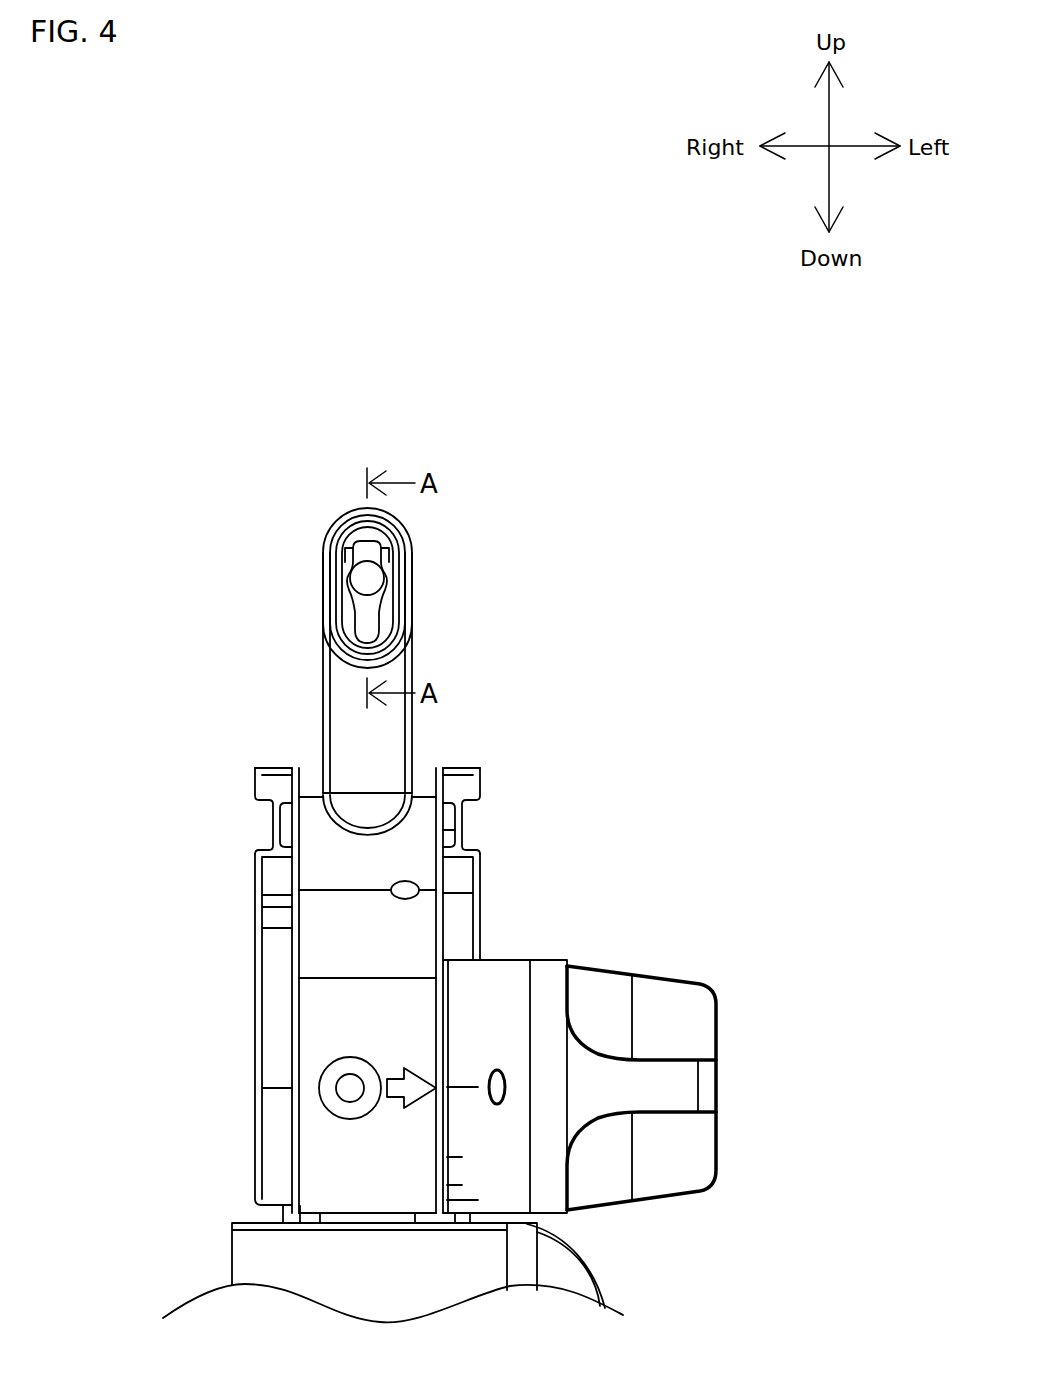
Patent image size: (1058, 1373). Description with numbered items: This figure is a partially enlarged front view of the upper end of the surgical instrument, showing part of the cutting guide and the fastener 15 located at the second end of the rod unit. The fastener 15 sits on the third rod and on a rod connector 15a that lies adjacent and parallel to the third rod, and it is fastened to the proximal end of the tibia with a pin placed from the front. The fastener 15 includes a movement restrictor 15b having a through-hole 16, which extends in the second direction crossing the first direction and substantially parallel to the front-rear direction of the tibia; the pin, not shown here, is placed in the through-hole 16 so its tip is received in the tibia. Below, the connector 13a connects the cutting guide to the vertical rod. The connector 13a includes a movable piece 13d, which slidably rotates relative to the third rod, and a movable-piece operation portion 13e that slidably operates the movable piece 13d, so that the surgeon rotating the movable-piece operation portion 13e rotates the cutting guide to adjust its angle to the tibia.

The connector 13a is at (273, 823).
The movable piece 13d is at (277, 1015).
The movable-piece operation portion 13e is at (687, 1007).
The fastener 15 is at (334, 583).
The rod connector 15a is at (342, 707).
The movement restrictor 15b is at (335, 530).
The through-hole 16 is at (380, 627).